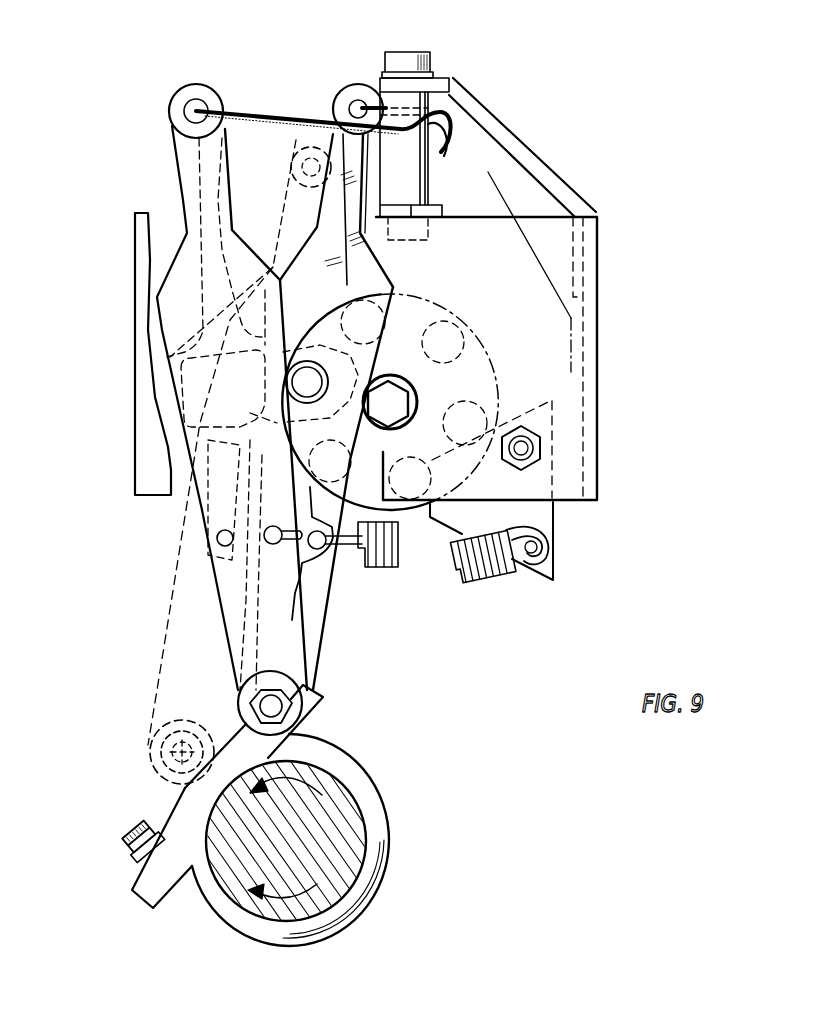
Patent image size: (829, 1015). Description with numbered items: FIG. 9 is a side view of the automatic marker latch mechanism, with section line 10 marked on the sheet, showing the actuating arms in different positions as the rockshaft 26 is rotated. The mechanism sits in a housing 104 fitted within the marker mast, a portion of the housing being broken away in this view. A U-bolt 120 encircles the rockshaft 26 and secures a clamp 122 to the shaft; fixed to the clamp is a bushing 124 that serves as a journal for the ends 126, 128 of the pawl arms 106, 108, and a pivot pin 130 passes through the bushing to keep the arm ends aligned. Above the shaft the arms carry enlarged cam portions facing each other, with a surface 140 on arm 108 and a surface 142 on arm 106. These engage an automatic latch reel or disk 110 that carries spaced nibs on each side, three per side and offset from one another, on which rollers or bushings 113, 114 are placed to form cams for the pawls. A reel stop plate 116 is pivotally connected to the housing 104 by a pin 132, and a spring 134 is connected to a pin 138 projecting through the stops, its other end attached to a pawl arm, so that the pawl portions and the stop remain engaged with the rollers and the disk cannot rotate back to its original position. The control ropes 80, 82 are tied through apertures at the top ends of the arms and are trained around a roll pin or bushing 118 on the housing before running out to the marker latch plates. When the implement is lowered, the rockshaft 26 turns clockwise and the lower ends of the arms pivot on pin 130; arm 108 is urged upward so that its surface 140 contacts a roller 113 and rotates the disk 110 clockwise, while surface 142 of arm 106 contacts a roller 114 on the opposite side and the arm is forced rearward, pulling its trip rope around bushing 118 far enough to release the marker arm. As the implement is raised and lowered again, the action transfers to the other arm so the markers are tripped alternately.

The section line 10 is at (449, 80).
The rockshaft 26 is at (294, 852).
The control rope 80 is at (449, 131).
The control rope 82 is at (446, 153).
The housing 104 is at (136, 356).
The pawl arm 106 is at (178, 170).
The pawl arm 108 is at (318, 143).
The latch reel or disk 110 is at (486, 356).
The roller or bushing 113 is at (378, 311).
The roller or bushing 114 is at (456, 326).
The reel stop plate 116 is at (553, 521).
The roll pin or bushing 118 is at (428, 176).
The U-bolt 120 is at (385, 840).
The clamp 122 is at (186, 803).
The bushing 124 is at (158, 768).
The pawl arm end 126 is at (297, 640).
The pawl arm end 128 is at (321, 610).
The pivot pin 130 is at (152, 752).
The pin 132 is at (530, 452).
The spring 134 is at (515, 578).
The pin 138 is at (539, 548).
The cam surface 140 is at (380, 352).
The cam surface 142 is at (312, 407).